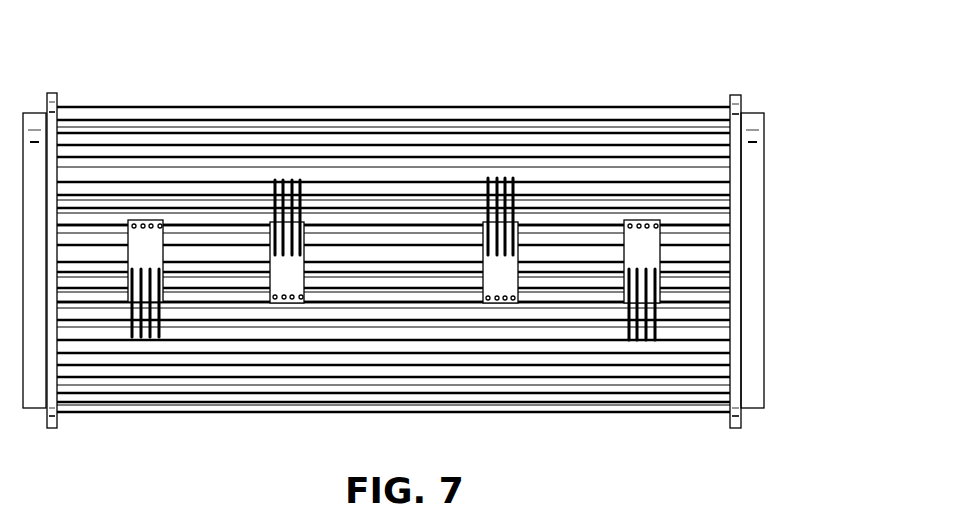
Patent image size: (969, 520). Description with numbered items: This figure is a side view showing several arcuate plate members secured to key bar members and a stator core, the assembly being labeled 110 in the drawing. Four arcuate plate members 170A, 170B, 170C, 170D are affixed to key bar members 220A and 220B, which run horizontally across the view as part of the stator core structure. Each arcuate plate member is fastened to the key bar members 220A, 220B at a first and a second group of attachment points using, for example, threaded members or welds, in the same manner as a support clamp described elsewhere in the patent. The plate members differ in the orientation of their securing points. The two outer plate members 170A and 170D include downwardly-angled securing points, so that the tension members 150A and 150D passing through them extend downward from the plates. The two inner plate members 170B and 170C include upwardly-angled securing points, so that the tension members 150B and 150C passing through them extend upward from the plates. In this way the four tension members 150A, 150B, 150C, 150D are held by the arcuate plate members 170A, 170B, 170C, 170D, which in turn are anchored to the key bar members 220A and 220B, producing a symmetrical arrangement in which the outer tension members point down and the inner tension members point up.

The louver panel 110 is at (301, 131).
The tension member 150A is at (148, 340).
The tension member 150B is at (286, 177).
The tension member 150C is at (487, 176).
The tension member 150D is at (644, 340).
The arcuate plate member 170A is at (139, 242).
The arcuate plate member 170B is at (283, 268).
The arcuate plate member 170C is at (493, 267).
The arcuate plate member 170D is at (642, 243).
The key bar member 220A is at (694, 232).
The key bar member 220B is at (690, 296).